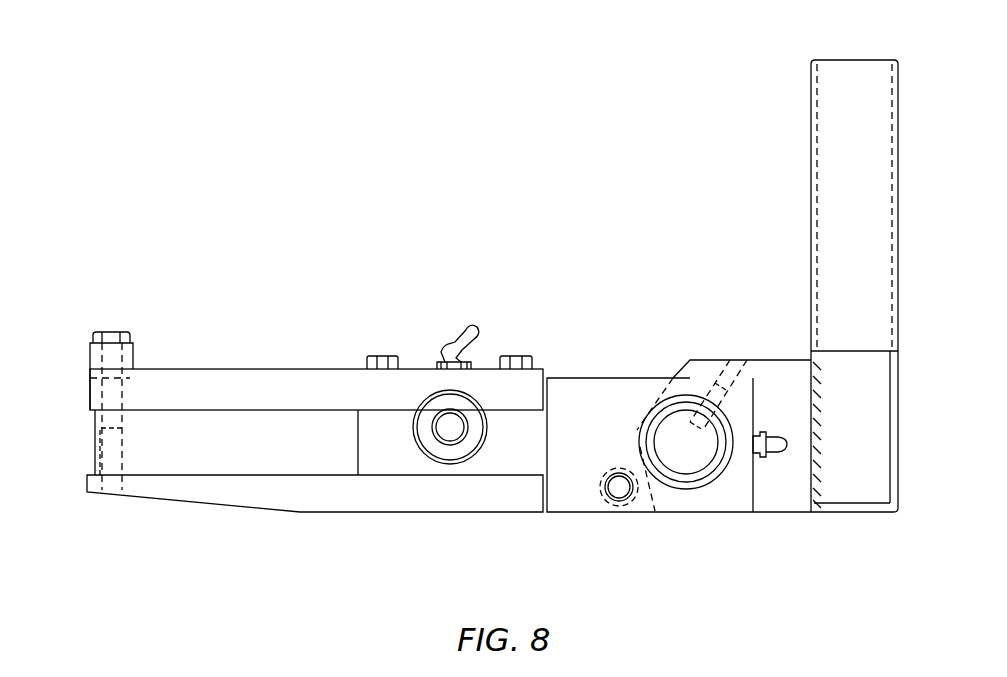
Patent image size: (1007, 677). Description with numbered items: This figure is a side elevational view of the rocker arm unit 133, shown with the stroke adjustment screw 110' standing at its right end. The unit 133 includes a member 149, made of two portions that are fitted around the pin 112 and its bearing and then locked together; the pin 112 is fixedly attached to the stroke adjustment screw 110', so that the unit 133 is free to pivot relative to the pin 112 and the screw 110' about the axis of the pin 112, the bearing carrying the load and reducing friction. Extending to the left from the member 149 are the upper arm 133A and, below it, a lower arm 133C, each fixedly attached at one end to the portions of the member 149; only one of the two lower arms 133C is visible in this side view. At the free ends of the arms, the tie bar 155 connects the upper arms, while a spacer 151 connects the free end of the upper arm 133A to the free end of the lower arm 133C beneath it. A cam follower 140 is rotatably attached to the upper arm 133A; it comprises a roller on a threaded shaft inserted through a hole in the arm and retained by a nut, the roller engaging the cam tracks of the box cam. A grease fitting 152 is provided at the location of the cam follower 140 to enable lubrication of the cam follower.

The stroke adjustment screw 110' is at (839, 267).
The pin 112 is at (702, 481).
The rocker arm unit 133 is at (315, 445).
The upper arm 133A is at (316, 372).
The lower arm 133C is at (315, 515).
The cam follower 140 is at (483, 478).
The member 149 is at (679, 419).
The spacer 151 is at (77, 416).
The grease fitting 152 is at (418, 332).
The tie bar 155 is at (147, 362).